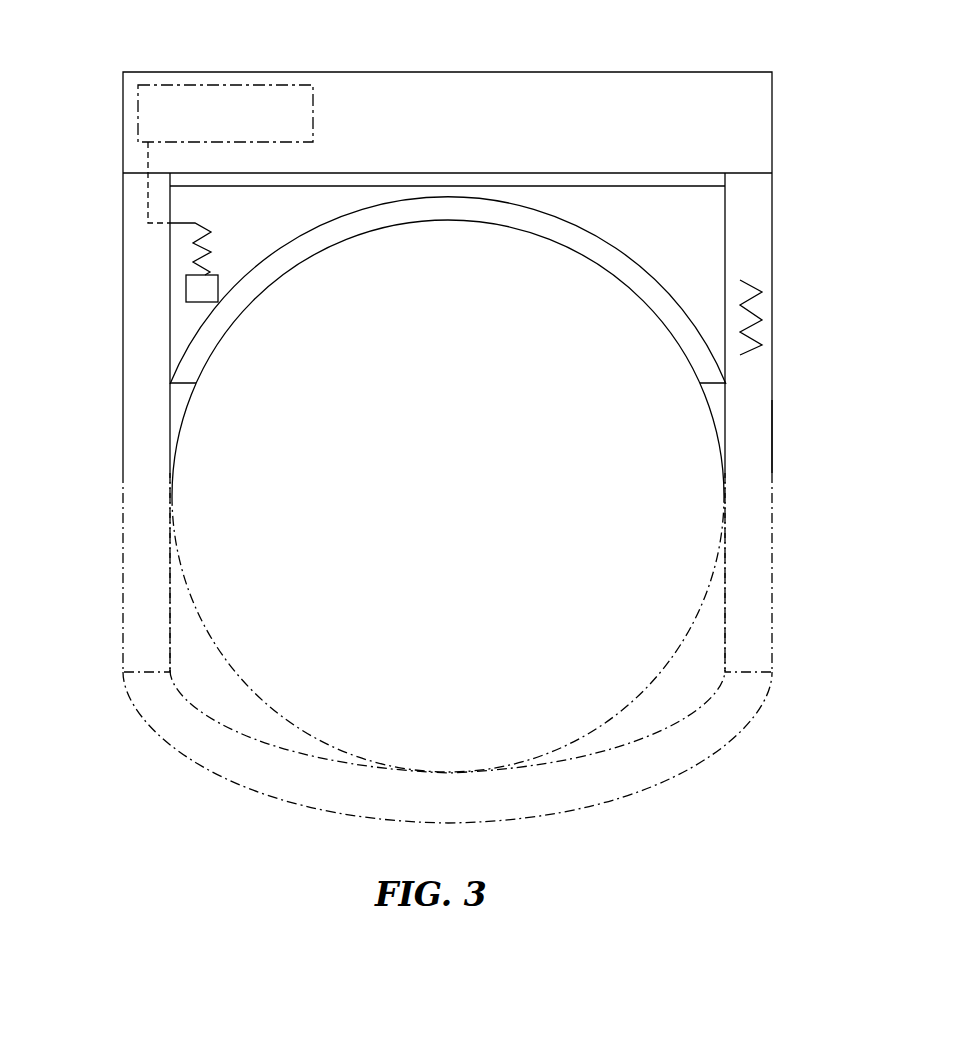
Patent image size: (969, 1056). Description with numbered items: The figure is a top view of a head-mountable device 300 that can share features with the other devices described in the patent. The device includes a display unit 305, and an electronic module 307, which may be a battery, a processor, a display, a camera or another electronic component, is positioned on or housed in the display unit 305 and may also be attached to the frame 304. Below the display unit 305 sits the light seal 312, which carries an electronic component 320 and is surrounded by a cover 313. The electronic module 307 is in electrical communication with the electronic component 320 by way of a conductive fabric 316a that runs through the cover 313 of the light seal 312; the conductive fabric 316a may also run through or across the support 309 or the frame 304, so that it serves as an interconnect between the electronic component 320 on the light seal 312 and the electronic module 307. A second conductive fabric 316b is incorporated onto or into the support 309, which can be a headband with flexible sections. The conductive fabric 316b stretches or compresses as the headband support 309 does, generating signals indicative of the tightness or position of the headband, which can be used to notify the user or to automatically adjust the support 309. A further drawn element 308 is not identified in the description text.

The head-mountable device 300 is at (709, 52).
The frame 304 is at (505, 172).
The display unit 305 is at (772, 122).
The electronic module 307 is at (228, 107).
The curved band 308 is at (190, 343).
The support 309 is at (772, 422).
The light seal 312 is at (280, 222).
The cover 313 is at (680, 228).
The conductive fabric 316a is at (205, 250).
The conductive fabric 316b is at (753, 325).
The electronic component 320 is at (186, 290).